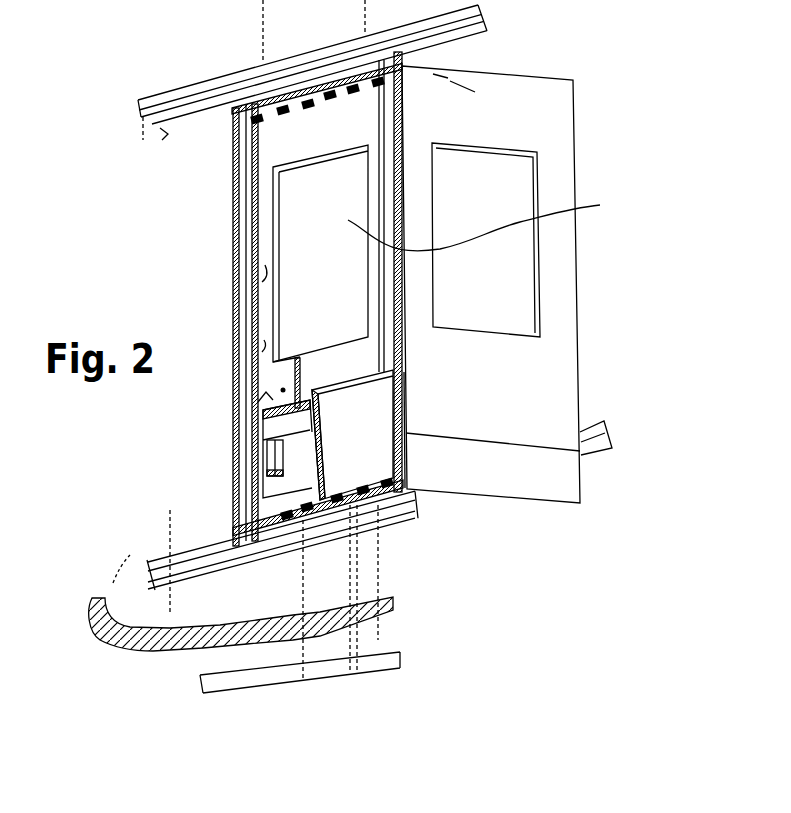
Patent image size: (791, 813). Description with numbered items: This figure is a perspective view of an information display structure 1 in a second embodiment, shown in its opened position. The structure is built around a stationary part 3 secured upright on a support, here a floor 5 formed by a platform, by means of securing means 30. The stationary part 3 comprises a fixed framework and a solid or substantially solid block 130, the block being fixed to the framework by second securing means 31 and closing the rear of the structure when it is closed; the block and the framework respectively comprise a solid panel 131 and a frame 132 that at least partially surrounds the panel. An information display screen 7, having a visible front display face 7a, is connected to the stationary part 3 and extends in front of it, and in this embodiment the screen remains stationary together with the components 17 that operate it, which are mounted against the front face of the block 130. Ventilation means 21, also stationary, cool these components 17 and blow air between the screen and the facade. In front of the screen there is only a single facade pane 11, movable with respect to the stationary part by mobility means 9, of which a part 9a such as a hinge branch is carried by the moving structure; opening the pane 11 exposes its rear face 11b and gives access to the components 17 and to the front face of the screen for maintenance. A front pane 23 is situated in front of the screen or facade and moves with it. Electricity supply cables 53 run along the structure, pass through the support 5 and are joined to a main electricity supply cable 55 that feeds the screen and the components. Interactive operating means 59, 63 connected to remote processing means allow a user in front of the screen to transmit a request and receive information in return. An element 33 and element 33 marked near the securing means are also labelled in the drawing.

The information display structure 1 is at (224, 406).
The stationary part 3 is at (232, 254).
The floor 5 is at (117, 592).
The information display screen 7 is at (300, 219).
The front display face 7a is at (233, 180).
The mobility means 9 is at (402, 152).
The part of the mobility means 9a is at (407, 400).
The facade pane 11 is at (526, 125).
The rear face of the facade 11b is at (563, 297).
The components for operating the display screen 17 is at (287, 430).
The ventilation means 21 is at (333, 83).
The front pane 23 is at (482, 307).
The securing means 30 is at (440, 525).
The second securing means 31 is at (462, 80).
The rail end 33 is at (163, 127).
The electricity supply cables 53 is at (262, 352).
The main electricity supply cable 55 is at (400, 667).
The interactive operating means 59 is at (475, 200).
The interactive operating means 63 is at (283, 467).
The solid block 130 is at (262, 282).
The solid panel 131 is at (357, 122).
The frame 132 is at (247, 307).